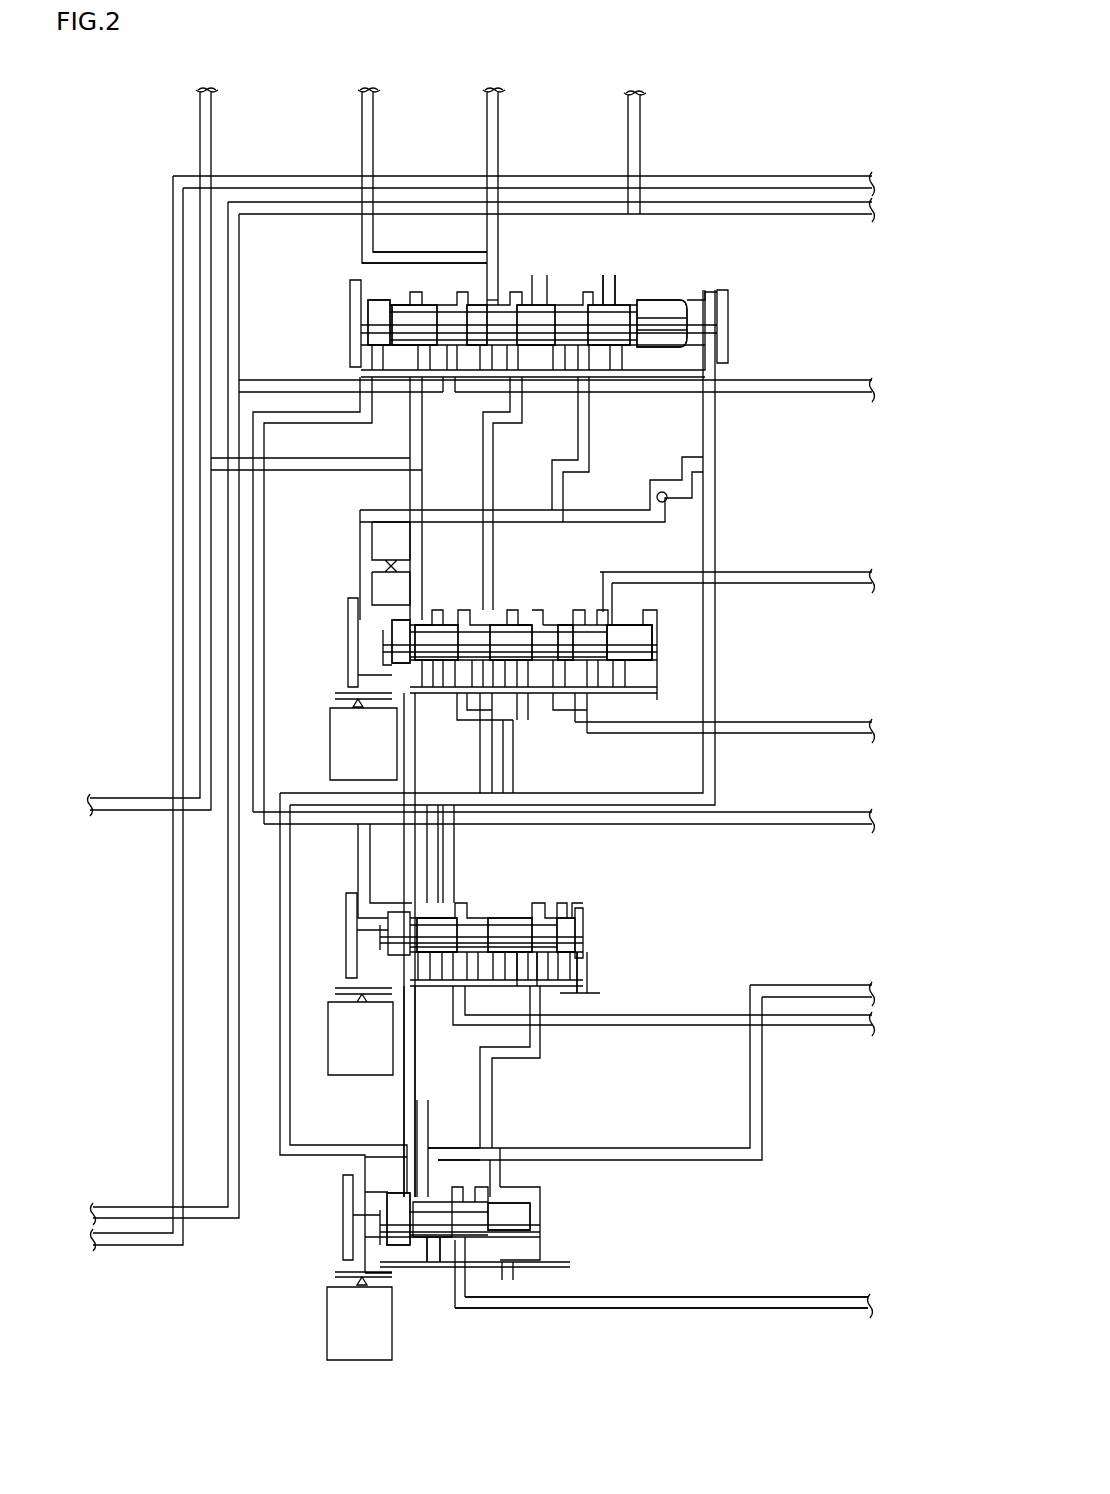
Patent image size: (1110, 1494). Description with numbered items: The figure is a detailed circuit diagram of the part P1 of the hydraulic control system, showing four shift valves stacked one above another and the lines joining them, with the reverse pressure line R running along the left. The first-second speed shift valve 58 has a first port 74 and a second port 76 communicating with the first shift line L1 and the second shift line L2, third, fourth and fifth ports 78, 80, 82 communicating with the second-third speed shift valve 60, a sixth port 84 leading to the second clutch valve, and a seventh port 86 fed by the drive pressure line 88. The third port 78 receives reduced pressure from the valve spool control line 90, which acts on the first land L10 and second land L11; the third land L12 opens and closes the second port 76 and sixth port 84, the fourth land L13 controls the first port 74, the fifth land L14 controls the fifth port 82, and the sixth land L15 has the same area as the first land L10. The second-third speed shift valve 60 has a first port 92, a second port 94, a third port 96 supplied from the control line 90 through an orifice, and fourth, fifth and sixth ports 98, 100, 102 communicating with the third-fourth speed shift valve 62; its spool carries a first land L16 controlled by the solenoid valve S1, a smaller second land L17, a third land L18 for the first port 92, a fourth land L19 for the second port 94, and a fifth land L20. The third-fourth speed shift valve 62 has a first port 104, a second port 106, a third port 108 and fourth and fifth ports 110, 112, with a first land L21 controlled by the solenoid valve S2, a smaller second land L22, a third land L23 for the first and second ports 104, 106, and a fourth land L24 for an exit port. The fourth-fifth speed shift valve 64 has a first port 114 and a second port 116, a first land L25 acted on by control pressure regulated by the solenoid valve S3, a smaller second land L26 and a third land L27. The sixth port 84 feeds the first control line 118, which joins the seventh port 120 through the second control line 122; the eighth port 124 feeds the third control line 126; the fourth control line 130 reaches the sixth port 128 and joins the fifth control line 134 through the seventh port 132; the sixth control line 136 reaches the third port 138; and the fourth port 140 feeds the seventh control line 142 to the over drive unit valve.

The part of the hydraulic circuit P1 is at (752, 108).
The reverse pressure line R is at (140, 1248).
The first shift line L1 is at (361, 130).
The second shift line L2 is at (486, 130).
The first-second speed shift valve 58 is at (720, 280).
The second-third speed shift valve 60 is at (668, 640).
The third-fourth speed shift valve 62 is at (595, 944).
The fourth-fifth speed shift valve 64 is at (548, 1226).
The first port 74 is at (562, 302).
The second port 76 is at (492, 304).
The third port 78 is at (412, 368).
The fourth port 80 is at (515, 368).
The fifth port 82 is at (590, 368).
The sixth port 84 is at (464, 368).
The seventh port 86 is at (429, 308).
The drive pressure line 88 is at (240, 1189).
The valve spool control line 90 is at (317, 470).
The first port 92 is at (488, 624).
The second port 94 is at (554, 625).
The third port 96 is at (392, 606).
The fourth port 98 is at (372, 676).
The fifth port 100 is at (463, 698).
The sixth port 102 is at (542, 704).
The first port 104 is at (502, 916).
The second port 106 is at (510, 918).
The third port 108 is at (420, 908).
The fourth port 110 is at (416, 994).
The fifth port 112 is at (535, 992).
The first port 114 is at (392, 1178).
The second port 116 is at (490, 1196).
The first control line 118 is at (756, 394).
The seventh port 120 is at (608, 628).
The second control line 122 is at (814, 584).
The eighth port 124 is at (588, 698).
The third control line 126 is at (777, 734).
The sixth port 128 is at (420, 888).
The fourth control line 130 is at (742, 830).
The seventh port 132 is at (478, 1010).
The fifth control line 134 is at (698, 1030).
The sixth control line 136 is at (730, 1162).
The third port 138 is at (432, 1186).
The fourth port 140 is at (456, 1252).
The seventh control line 142 is at (734, 1298).
The first land L10 is at (372, 314).
The second land L11 is at (397, 316).
The third land L12 is at (473, 318).
The fourth land L13 is at (539, 304).
The fifth land L14 is at (612, 316).
The sixth land L15 is at (670, 314).
The first land L16 is at (380, 632).
The second land L17 is at (446, 630).
The third land L18 is at (515, 626).
The fourth land L19 is at (580, 630).
The fifth land L20 is at (641, 630).
The first land L21 is at (375, 940).
The second land L22 is at (459, 916).
The third land L23 is at (546, 1018).
The fourth land L24 is at (580, 962).
The first land L25 is at (388, 1232).
The second land L26 is at (430, 1262).
The third land L27 is at (505, 1220).
The solenoid valve S1 is at (363, 744).
The solenoid valve S2 is at (360, 1031).
The solenoid valve S3 is at (359, 1323).